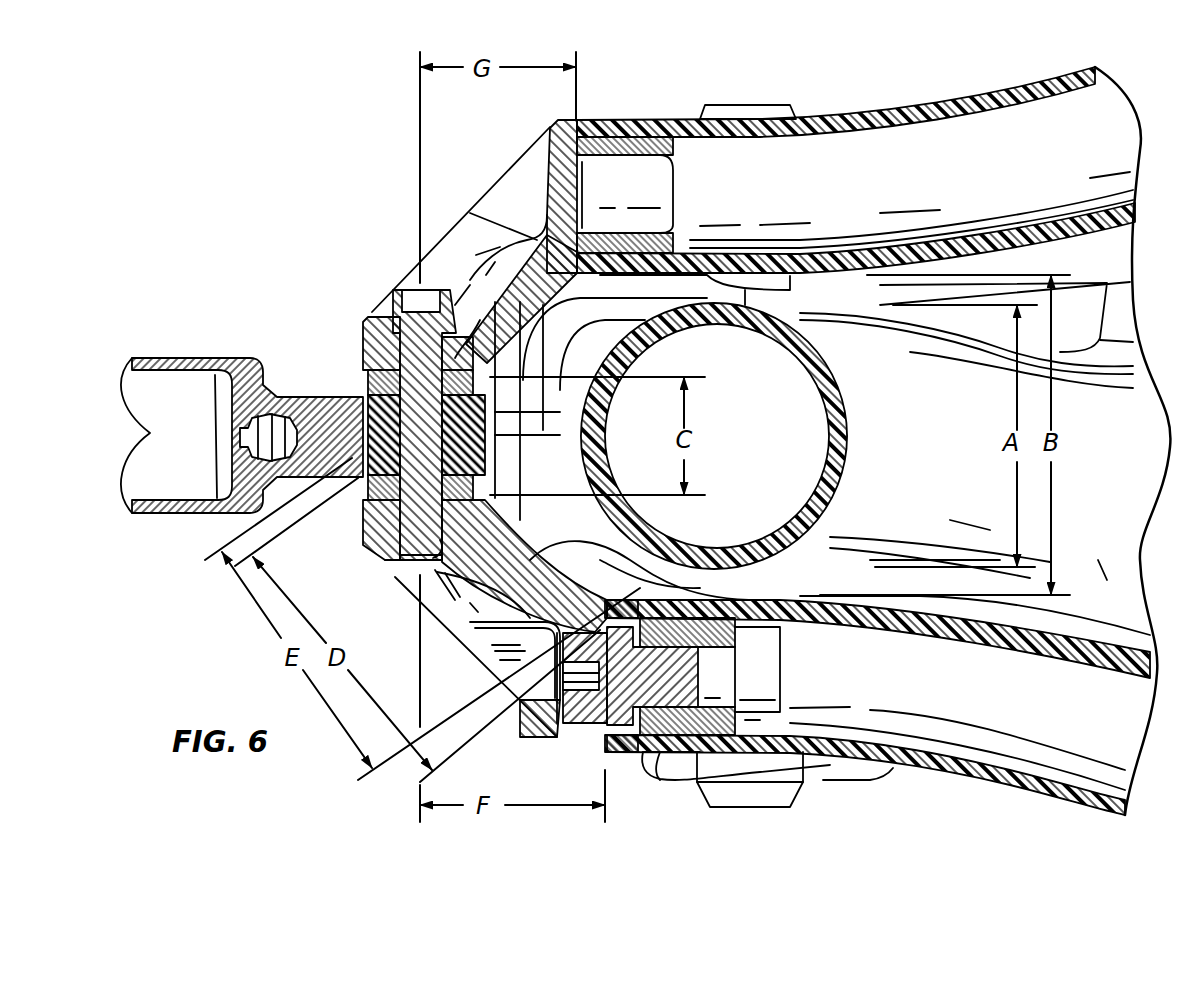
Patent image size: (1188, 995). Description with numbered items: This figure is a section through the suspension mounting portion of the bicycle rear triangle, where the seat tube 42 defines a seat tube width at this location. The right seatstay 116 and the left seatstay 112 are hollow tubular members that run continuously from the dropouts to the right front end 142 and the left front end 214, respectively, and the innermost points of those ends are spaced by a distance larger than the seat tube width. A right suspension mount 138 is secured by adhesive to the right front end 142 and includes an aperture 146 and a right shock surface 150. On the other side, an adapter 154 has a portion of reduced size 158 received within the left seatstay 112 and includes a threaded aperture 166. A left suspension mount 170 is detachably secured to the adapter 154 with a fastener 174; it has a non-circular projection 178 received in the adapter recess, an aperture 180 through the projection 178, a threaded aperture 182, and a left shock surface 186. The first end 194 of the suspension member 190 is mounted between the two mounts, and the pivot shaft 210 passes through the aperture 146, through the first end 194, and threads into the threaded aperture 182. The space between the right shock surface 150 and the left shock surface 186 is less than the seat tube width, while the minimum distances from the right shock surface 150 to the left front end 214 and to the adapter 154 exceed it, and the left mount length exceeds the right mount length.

The seat tube 42 is at (817, 470).
The left seatstay 112 is at (943, 767).
The right seatstay 116 is at (873, 118).
The right suspension mount 138 is at (515, 185).
The right front end 142 is at (572, 127).
The aperture 146 is at (377, 330).
The right shock surface 150 is at (370, 383).
The adapter 154 is at (670, 730).
The portion of reduced size 158 is at (695, 723).
The threaded aperture 166 is at (683, 697).
The left suspension mount 170 is at (501, 618).
The fastener 174 is at (575, 710).
The projection 178 is at (600, 625).
The aperture 180 is at (623, 687).
The threaded aperture 182 is at (403, 557).
The left shock surface 186 is at (362, 495).
The suspension member 190 is at (175, 322).
The first end 194 is at (313, 403).
The pivot shaft 210 is at (412, 295).
The left front end 214 is at (628, 745).